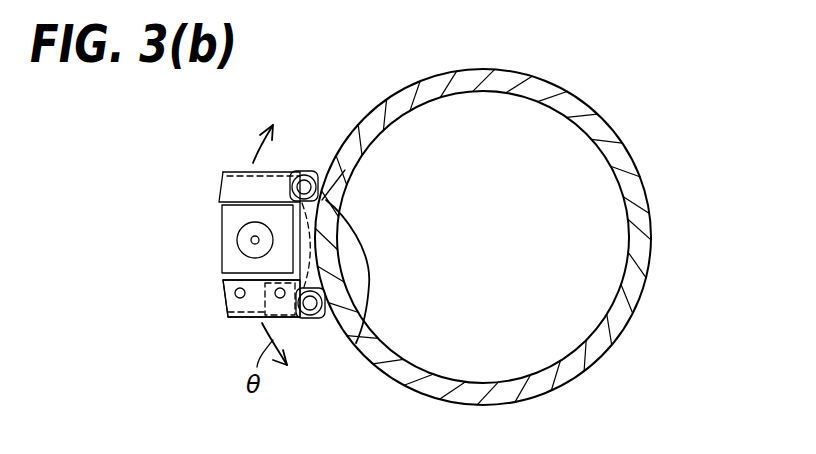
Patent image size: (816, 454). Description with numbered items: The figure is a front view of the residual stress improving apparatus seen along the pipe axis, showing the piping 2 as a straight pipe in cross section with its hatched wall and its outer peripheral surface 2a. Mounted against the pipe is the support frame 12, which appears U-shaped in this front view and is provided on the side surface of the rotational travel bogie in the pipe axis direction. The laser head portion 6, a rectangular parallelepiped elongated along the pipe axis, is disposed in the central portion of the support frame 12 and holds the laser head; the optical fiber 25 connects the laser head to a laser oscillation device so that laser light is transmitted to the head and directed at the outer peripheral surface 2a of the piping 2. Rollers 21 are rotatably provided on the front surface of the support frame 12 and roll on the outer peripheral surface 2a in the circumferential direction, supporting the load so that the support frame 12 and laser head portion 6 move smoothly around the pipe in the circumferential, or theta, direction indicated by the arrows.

The piping 2 is at (483, 219).
The outer peripheral surface 2a is at (436, 75).
The laser head portion 6 is at (232, 244).
The optical fiber 25 is at (250, 241).
The support frame 12 is at (237, 320).
The rollers 21 is at (325, 320).